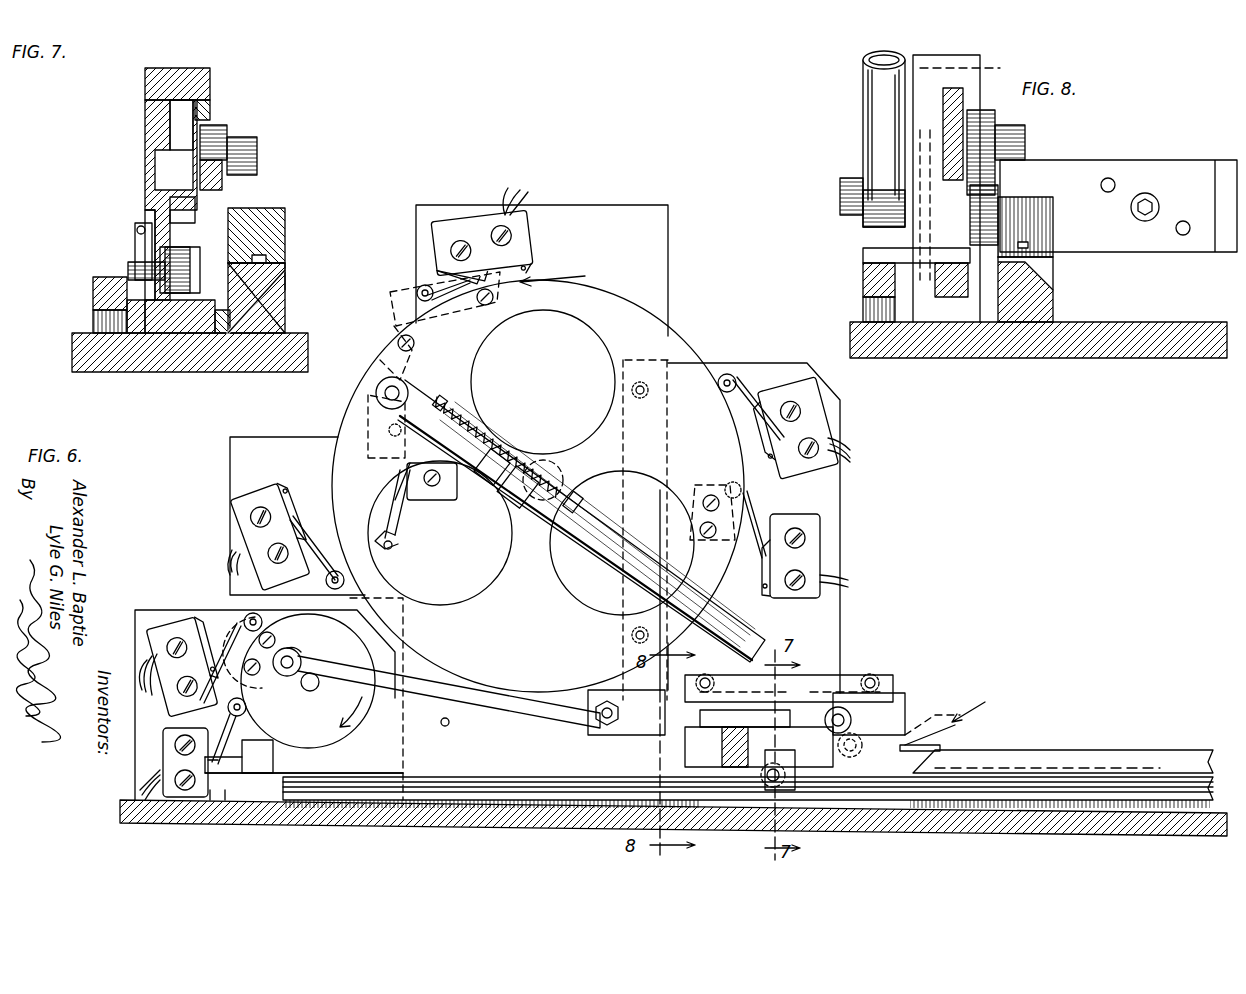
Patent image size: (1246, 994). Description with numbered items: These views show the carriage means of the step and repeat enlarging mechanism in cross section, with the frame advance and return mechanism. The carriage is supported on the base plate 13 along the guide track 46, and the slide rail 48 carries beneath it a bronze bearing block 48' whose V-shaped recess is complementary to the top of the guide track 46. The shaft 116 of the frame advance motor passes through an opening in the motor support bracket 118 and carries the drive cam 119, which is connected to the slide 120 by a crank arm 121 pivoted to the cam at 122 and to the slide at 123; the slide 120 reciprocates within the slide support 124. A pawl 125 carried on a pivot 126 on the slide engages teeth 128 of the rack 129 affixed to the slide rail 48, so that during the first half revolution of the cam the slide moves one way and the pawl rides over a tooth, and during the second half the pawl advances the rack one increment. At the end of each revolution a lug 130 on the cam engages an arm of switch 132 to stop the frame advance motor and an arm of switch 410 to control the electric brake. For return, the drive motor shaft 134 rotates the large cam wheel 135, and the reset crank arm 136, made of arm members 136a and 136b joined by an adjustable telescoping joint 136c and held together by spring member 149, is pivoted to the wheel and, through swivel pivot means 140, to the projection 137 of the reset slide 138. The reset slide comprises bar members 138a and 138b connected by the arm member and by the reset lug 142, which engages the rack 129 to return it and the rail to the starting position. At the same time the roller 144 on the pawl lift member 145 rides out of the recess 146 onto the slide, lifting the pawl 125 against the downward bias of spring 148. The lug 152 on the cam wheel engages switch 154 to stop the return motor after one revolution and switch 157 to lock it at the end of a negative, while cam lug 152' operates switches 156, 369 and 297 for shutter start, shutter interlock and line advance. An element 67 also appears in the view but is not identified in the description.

In FIG. 7, the base plate 13 is at (100, 373).
In FIG. 8, the base plate 13 is at (1115, 358).
In FIG. 6, the base plate 13 is at (1170, 828).
In FIG. 7, the guide track 46 is at (280, 316).
In FIG. 8, the guide track 46 is at (1050, 312).
In FIG. 6, the guide track 46 is at (360, 778).
In FIG. 7, the slide rail 48 is at (279, 263).
In FIG. 8, the slide rail 48 is at (1051, 235).
In FIG. 7, the bearing block 48' is at (278, 266).
In FIG. 8, the bearing block 48' is at (1052, 275).
In FIG. 6, the direction arrow 67 is at (952, 705).
In FIG. 6, the shaft 116 is at (310, 692).
In FIG. 6, the motor support bracket 118 is at (152, 612).
In FIG. 6, the drive cam 119 is at (443, 676).
In FIG. 7, the slide 120 is at (176, 135).
In FIG. 6, the slide 120 is at (633, 682).
In FIG. 6, the crank arm 121 is at (473, 700).
In FIG. 6, the pivotal connection 122 is at (280, 668).
In FIG. 6, the pivotal connection 123 is at (603, 728).
In FIG. 7, the slide support 124 is at (150, 126).
In FIG. 6, the slide support 124 is at (725, 678).
In FIG. 7, the pawl 125 is at (222, 185).
In FIG. 8, the pawl 125 is at (982, 112).
In FIG. 6, the pawl 125 is at (812, 700).
In FIG. 7, the pivot 126 is at (245, 140).
In FIG. 8, the pivot 126 is at (1015, 140).
In FIG. 6, the pivot 126 is at (846, 718).
In FIG. 6, the teeth 128 is at (939, 726).
In FIG. 8, the rack 129 is at (975, 208).
In FIG. 6, the rack 129 is at (1063, 761).
In FIG. 6, the lug 130 is at (278, 610).
In FIG. 6, the switch 132 is at (185, 635).
In FIG. 6, the drive motor shaft 134 is at (530, 505).
In FIG. 6, the cam wheel 135 is at (610, 320).
In FIG. 8, the reset crank arm 136 is at (870, 106).
In FIG. 6, the reset crank arm 136 is at (712, 630).
In FIG. 6, the arm member 136a is at (438, 404).
In FIG. 6, the arm member 136b is at (600, 570).
In FIG. 6, the adjustable telescoping joint 136c is at (490, 478).
In FIG. 8, the projection 137 is at (900, 230).
In FIG. 6, the projection 137 is at (950, 702).
In FIG. 8, the reset slide 138 is at (865, 258).
In FIG. 6, the reset slide 138 is at (925, 750).
In FIG. 7, the bar member 138a is at (93, 292).
In FIG. 8, the bar member 138a is at (865, 284).
In FIG. 7, the bar member 138b is at (180, 320).
In FIG. 8, the bar member 138b is at (950, 297).
In FIG. 6, the bar member 138b is at (262, 790).
In FIG. 8, the swivel pivot means 140 is at (850, 185).
In FIG. 6, the swivel pivot means 140 is at (840, 750).
In FIG. 6, the reset lug 142 is at (265, 762).
In FIG. 7, the roller 144 is at (215, 242).
In FIG. 6, the roller 144 is at (745, 790).
In FIG. 7, the pawl lift member 145 is at (185, 230).
In FIG. 7, the recess 146 is at (244, 270).
In FIG. 7, the spring 148 is at (135, 246).
In FIG. 6, the spring member 149 is at (527, 453).
In FIG. 6, the lug 152 is at (710, 492).
In FIG. 6, the cam lug 152' is at (415, 326).
In FIG. 6, the switch 154 is at (812, 520).
In FIG. 6, the switch 156 is at (812, 416).
In FIG. 6, the switch 157 is at (440, 502).
In FIG. 6, the switch 297 is at (228, 510).
In FIG. 6, the switch 369 is at (452, 225).
In FIG. 6, the switch 410 is at (170, 800).